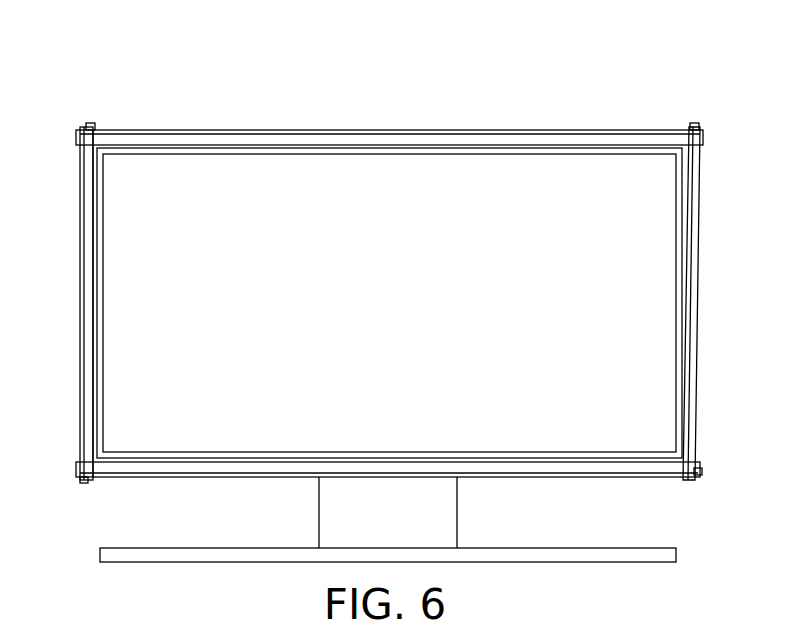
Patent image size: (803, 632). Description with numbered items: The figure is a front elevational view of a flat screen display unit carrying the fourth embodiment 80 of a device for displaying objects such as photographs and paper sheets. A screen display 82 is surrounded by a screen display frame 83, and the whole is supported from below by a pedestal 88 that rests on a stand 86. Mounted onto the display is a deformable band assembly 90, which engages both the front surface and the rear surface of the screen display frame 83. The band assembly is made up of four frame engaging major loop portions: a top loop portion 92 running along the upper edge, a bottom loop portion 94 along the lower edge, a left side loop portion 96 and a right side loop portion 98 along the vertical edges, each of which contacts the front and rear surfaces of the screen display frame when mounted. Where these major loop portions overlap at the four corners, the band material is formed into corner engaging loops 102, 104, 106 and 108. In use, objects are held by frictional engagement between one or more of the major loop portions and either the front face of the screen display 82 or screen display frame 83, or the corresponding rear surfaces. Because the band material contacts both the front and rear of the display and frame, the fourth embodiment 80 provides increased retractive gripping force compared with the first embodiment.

The fourth embodiment 80 is at (579, 94).
The screen display 82 is at (213, 190).
The screen display frame 83 is at (88, 300).
The stand 86 is at (654, 562).
The pedestal 88 is at (447, 515).
The deformable band assembly 90 is at (688, 227).
The top frame engaging major loop portion 92 is at (140, 144).
The bottom frame engaging major loop portion 94 is at (604, 465).
The left side frame engaging major loop portion 96 is at (95, 237).
The right side frame engaging major loop portion 98 is at (690, 343).
The corner engaging loop 102 is at (88, 126).
The corner engaging loop 104 is at (691, 128).
The corner engaging loop 106 is at (697, 472).
The corner engaging loop 108 is at (88, 479).